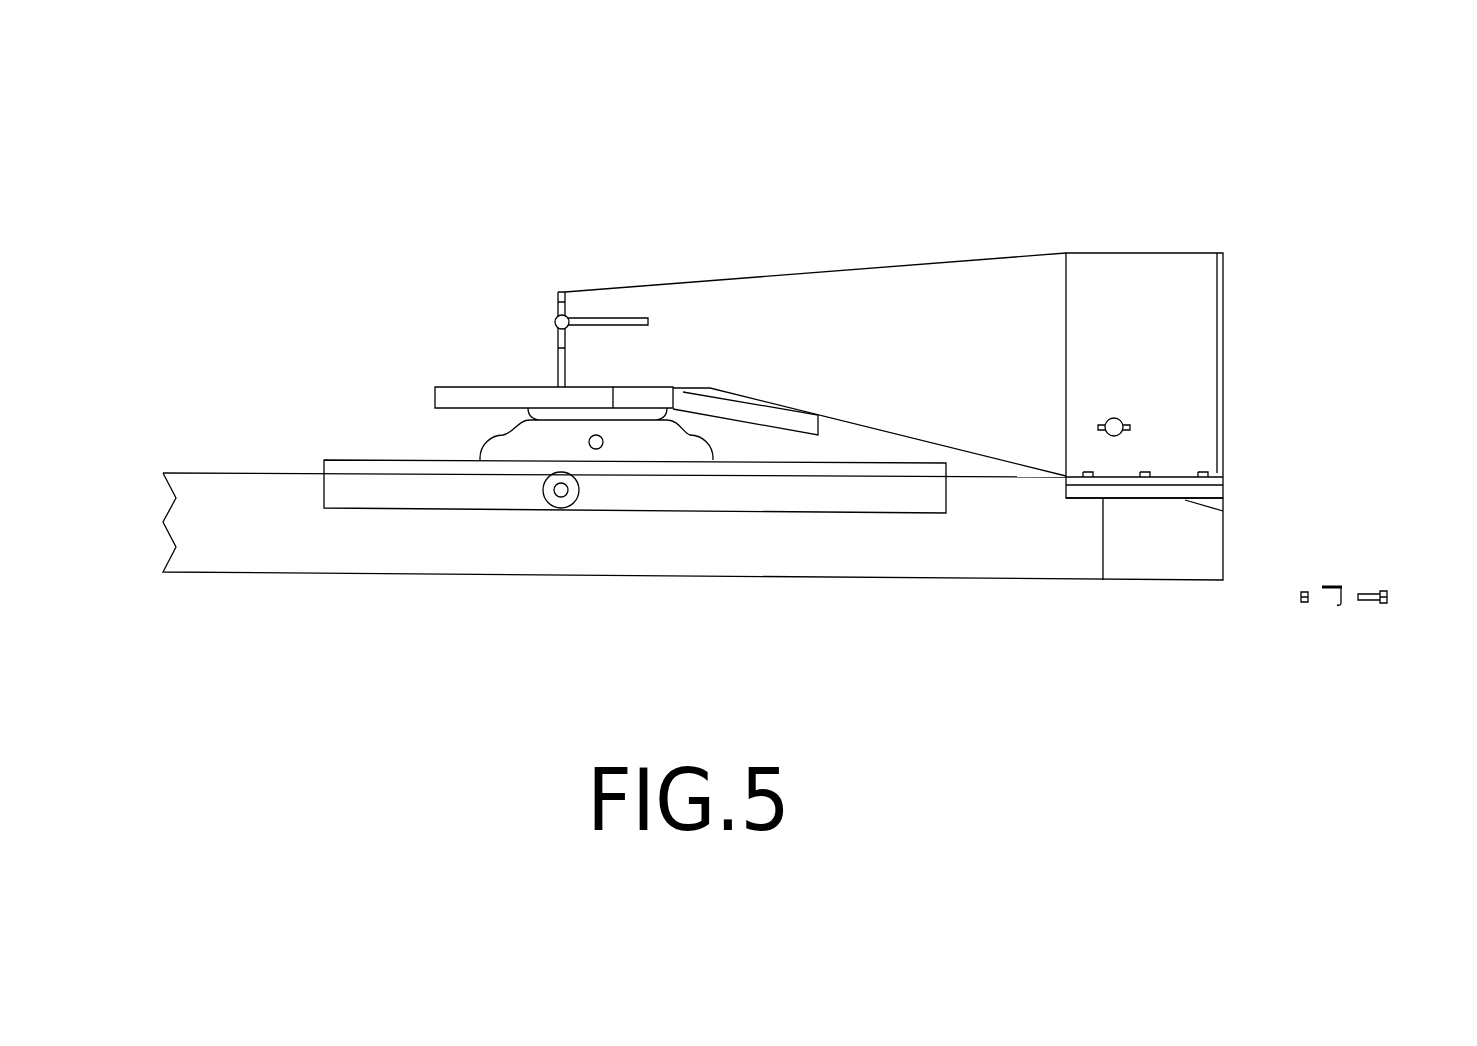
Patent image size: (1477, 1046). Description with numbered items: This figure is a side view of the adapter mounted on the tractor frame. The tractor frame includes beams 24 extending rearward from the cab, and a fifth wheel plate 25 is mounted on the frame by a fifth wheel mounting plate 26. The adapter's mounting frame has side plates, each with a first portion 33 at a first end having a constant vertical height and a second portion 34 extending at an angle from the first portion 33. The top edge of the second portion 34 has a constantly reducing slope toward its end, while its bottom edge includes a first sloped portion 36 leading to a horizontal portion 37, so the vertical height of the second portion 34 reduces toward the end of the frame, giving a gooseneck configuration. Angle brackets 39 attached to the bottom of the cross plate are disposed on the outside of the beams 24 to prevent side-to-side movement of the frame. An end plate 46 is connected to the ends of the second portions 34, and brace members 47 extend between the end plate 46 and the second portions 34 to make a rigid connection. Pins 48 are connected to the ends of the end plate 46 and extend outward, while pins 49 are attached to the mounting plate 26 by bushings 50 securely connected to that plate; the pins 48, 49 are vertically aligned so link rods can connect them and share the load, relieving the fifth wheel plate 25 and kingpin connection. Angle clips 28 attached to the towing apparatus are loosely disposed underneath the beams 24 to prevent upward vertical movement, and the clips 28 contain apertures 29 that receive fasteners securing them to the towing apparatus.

The beams 24 is at (213, 530).
The fifth wheel plate 25 is at (440, 383).
The fifth wheel mounting plate 26 is at (338, 468).
The angle clips 28 is at (1335, 585).
The apertures 29 is at (1337, 602).
The first portion 33 is at (1175, 267).
The second portion 34 is at (888, 277).
The first sloped portion 36 is at (875, 430).
The horizontal portion 37 is at (703, 393).
The angle brackets 39 is at (1080, 500).
The end plate 46 is at (558, 290).
The brace members 47 is at (623, 316).
The pins 48 is at (552, 314).
The pins 49 is at (548, 505).
The bushings 50 is at (573, 503).